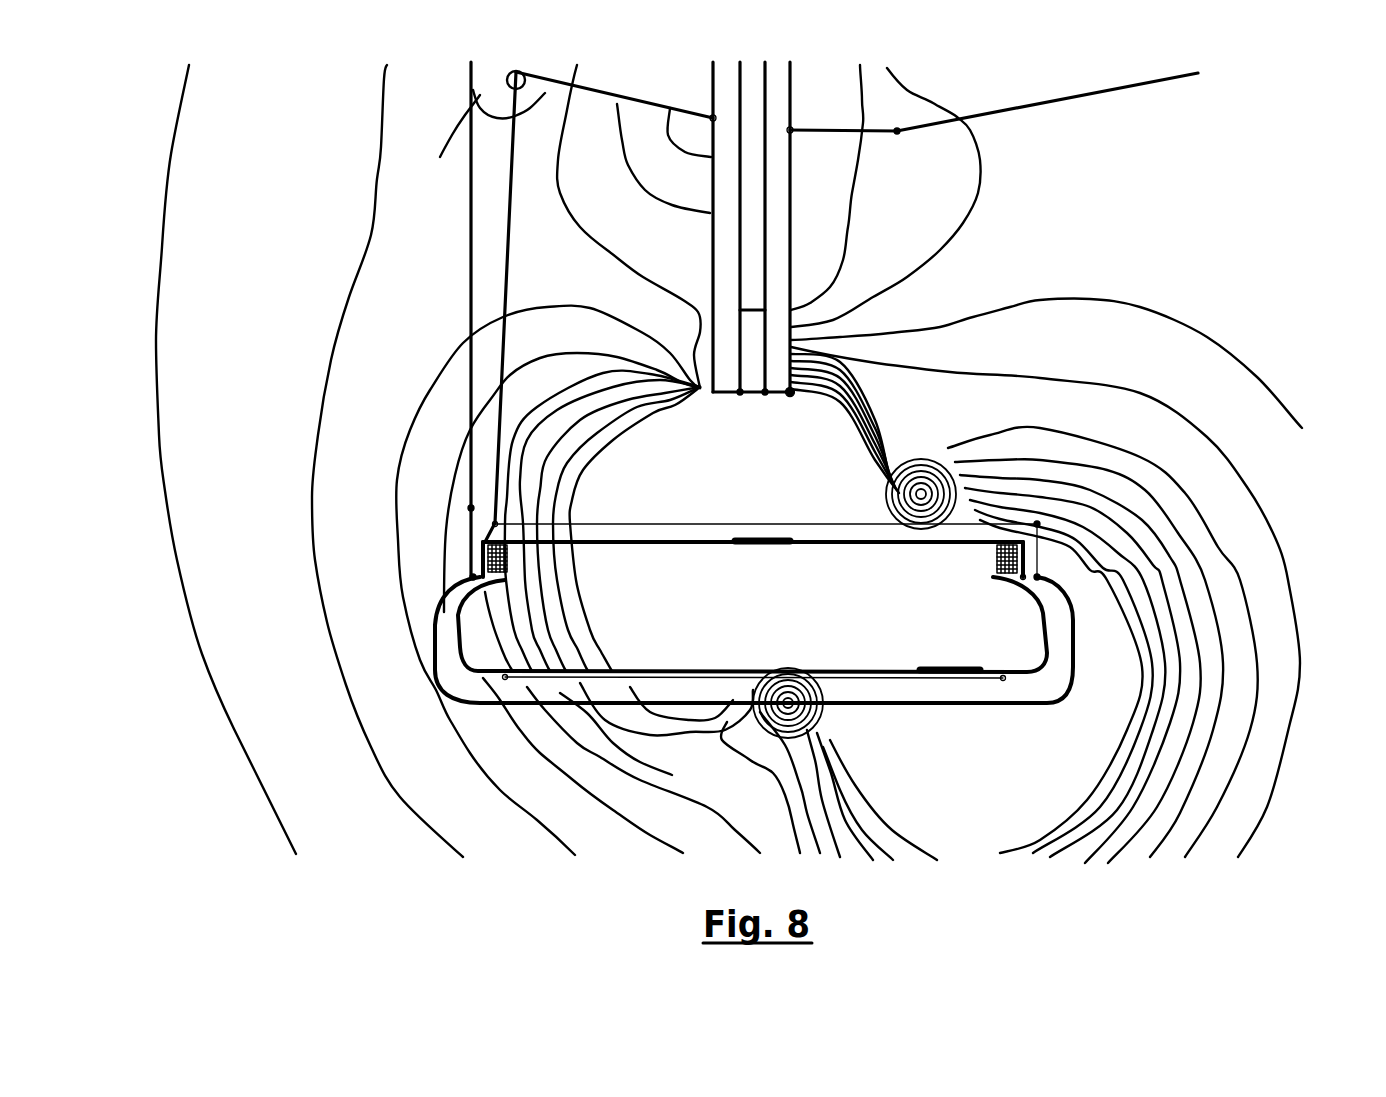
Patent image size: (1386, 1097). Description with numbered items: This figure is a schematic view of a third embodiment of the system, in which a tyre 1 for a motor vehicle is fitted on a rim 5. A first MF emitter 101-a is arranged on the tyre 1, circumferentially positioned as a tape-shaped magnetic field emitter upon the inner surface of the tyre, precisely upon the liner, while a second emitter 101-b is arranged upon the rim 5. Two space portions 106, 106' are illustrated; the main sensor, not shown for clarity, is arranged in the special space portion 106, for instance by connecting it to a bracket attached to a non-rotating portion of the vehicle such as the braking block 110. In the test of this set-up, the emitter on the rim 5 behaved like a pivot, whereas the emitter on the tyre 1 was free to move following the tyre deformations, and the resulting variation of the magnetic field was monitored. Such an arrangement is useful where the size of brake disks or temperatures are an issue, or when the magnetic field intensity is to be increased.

The tyre 1 is at (450, 665).
The rim 5 is at (507, 257).
The braking block 110 is at (775, 217).
The special space portion 106 is at (1015, 476).
The space portion 106' is at (694, 744).
The first MF emitter 101-a is at (943, 660).
The second emitter 101-b is at (762, 548).